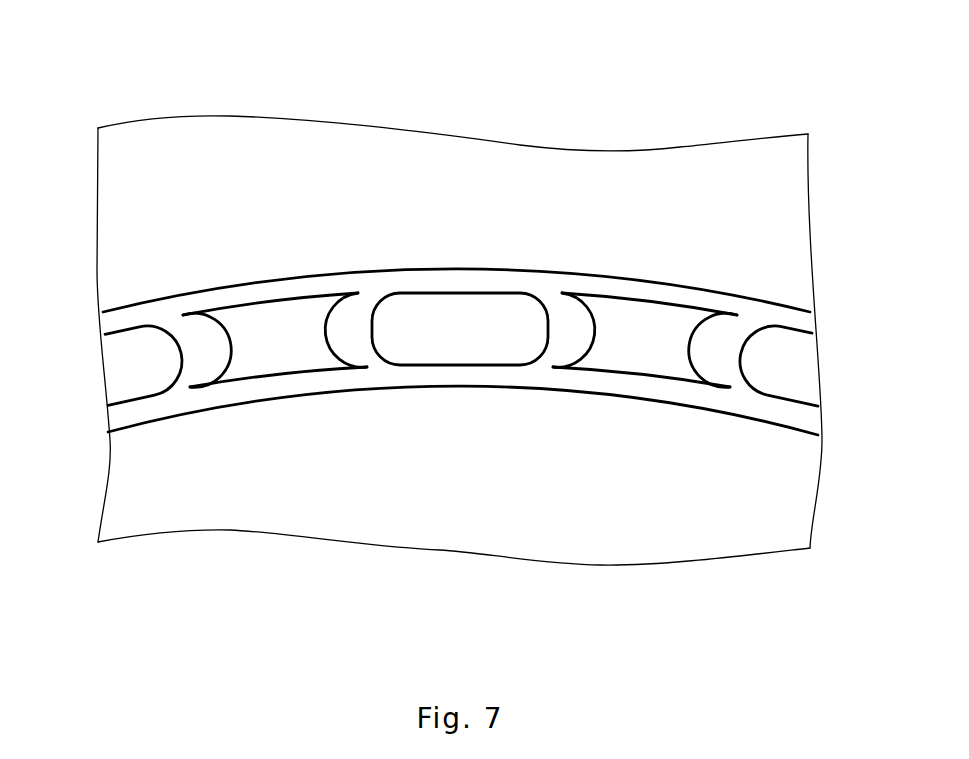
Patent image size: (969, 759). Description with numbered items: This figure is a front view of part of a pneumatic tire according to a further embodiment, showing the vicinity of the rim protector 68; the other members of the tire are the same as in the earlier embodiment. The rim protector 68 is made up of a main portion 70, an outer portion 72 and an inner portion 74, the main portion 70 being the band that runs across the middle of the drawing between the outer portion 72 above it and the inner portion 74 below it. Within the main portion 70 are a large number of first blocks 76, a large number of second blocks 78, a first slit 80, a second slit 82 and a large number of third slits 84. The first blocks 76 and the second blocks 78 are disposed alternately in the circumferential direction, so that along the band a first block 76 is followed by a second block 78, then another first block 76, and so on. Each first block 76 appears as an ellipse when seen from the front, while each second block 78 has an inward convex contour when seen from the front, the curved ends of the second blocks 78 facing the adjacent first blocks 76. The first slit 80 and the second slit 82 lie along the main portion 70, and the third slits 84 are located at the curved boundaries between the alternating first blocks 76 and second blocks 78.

The rim protector 68 is at (762, 212).
The main portion 70 is at (293, 278).
The outer portion 72 is at (485, 217).
The inner portion 74 is at (497, 442).
The first block 76 is at (128, 351).
The second block 78 is at (260, 346).
The first slit 80 is at (413, 282).
The second slit 82 is at (460, 377).
The third slit 84 is at (188, 358).